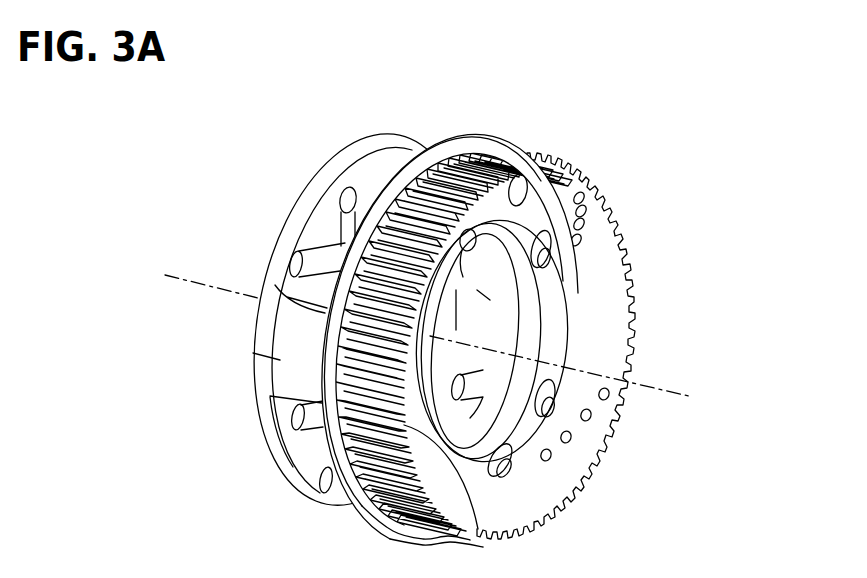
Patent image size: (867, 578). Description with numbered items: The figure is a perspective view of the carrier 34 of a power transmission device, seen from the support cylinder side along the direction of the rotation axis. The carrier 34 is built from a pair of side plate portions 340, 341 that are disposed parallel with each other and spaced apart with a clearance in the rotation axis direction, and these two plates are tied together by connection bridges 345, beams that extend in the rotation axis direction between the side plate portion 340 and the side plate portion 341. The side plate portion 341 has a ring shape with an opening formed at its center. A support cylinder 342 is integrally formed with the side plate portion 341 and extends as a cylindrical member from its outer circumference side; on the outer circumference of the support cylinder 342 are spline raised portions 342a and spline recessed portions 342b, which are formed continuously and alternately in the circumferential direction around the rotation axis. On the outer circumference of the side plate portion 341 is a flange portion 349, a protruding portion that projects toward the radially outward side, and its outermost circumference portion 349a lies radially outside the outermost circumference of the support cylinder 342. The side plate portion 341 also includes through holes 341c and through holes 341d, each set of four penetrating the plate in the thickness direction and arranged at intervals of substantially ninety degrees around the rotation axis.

The carrier 34 is at (328, 125).
The side plate portion 340 is at (318, 179).
The side plate portion 341 is at (560, 297).
The through holes 341c is at (500, 463).
The through holes 341d is at (557, 420).
The support cylinder 342 is at (677, 105).
The spline raised portions 342a is at (608, 203).
The spline recessed portions 342b is at (563, 182).
The connection bridges 345 is at (273, 360).
The flange portion 349 is at (488, 136).
The outermost circumference portion 349a is at (445, 148).